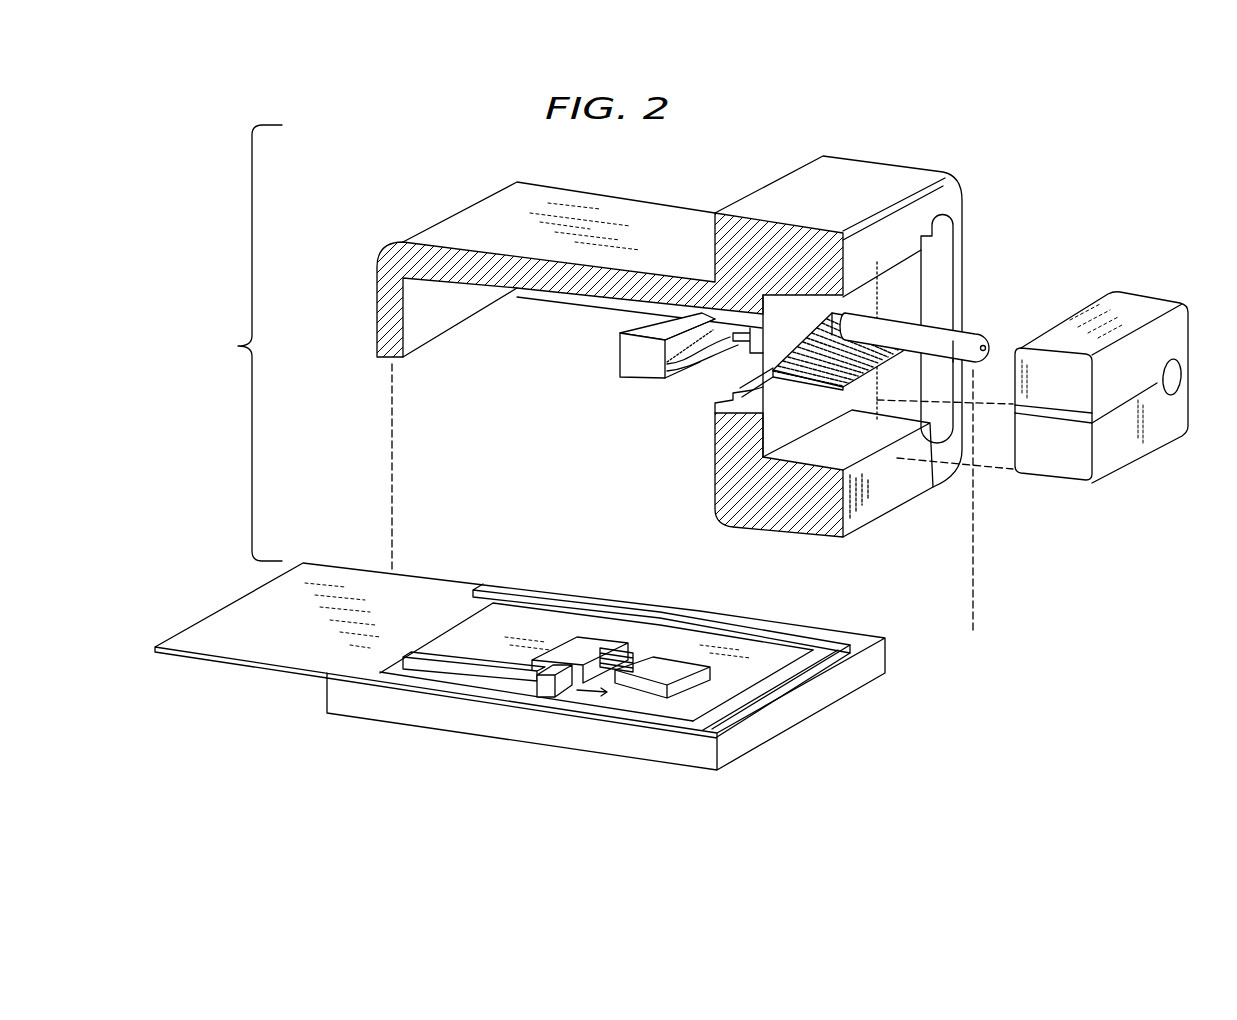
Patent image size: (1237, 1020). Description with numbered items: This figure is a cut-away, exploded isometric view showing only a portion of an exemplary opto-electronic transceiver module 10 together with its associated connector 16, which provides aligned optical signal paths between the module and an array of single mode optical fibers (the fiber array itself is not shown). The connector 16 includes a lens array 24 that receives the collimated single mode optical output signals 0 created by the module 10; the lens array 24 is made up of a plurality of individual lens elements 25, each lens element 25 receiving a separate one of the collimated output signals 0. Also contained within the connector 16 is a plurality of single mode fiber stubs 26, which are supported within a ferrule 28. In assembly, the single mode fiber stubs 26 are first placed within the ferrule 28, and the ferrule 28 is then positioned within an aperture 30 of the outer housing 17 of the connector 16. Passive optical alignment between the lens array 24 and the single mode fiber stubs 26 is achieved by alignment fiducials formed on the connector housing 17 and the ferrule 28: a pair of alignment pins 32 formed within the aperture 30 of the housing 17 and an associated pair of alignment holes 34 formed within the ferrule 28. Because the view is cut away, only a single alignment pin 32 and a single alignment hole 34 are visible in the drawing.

The connector 16 is at (243, 343).
The outer housing 17 is at (880, 172).
The aperture 30 is at (938, 267).
The alignment pin 32 is at (942, 338).
The single mode fiber stubs 26 is at (767, 367).
The lens array 24 is at (642, 367).
The lens element 25 is at (700, 357).
The ferrule 28 is at (1125, 296).
The alignment hole 34 is at (1180, 375).
The opto-electronic transceiver module 10 is at (885, 662).
The single mode optical output signals 0 is at (580, 686).